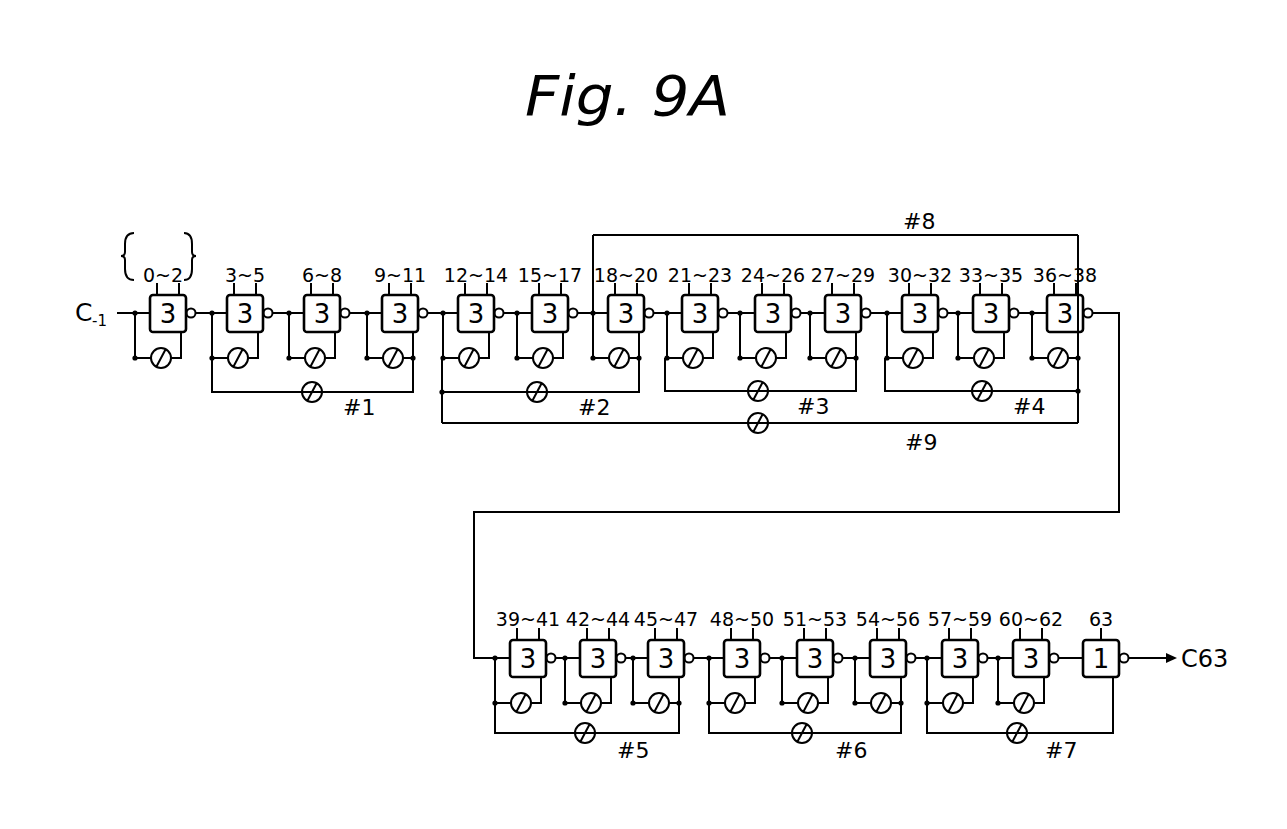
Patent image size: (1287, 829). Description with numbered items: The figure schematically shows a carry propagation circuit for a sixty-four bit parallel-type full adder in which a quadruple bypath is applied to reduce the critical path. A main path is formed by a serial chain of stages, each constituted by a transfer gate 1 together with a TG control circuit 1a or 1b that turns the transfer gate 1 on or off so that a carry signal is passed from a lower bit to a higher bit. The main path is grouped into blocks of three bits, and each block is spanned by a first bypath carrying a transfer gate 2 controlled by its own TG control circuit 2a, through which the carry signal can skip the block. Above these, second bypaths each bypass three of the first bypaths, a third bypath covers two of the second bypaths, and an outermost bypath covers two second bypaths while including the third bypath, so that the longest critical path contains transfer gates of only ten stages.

The carry signal transfer circuit 1 is at (137, 328).
The TG control circuit 1a is at (115, 256).
The TG control circuit 1b is at (202, 256).
The carry signal transfer circuit 2 is at (167, 368).
The TG control circuit 2a is at (311, 403).